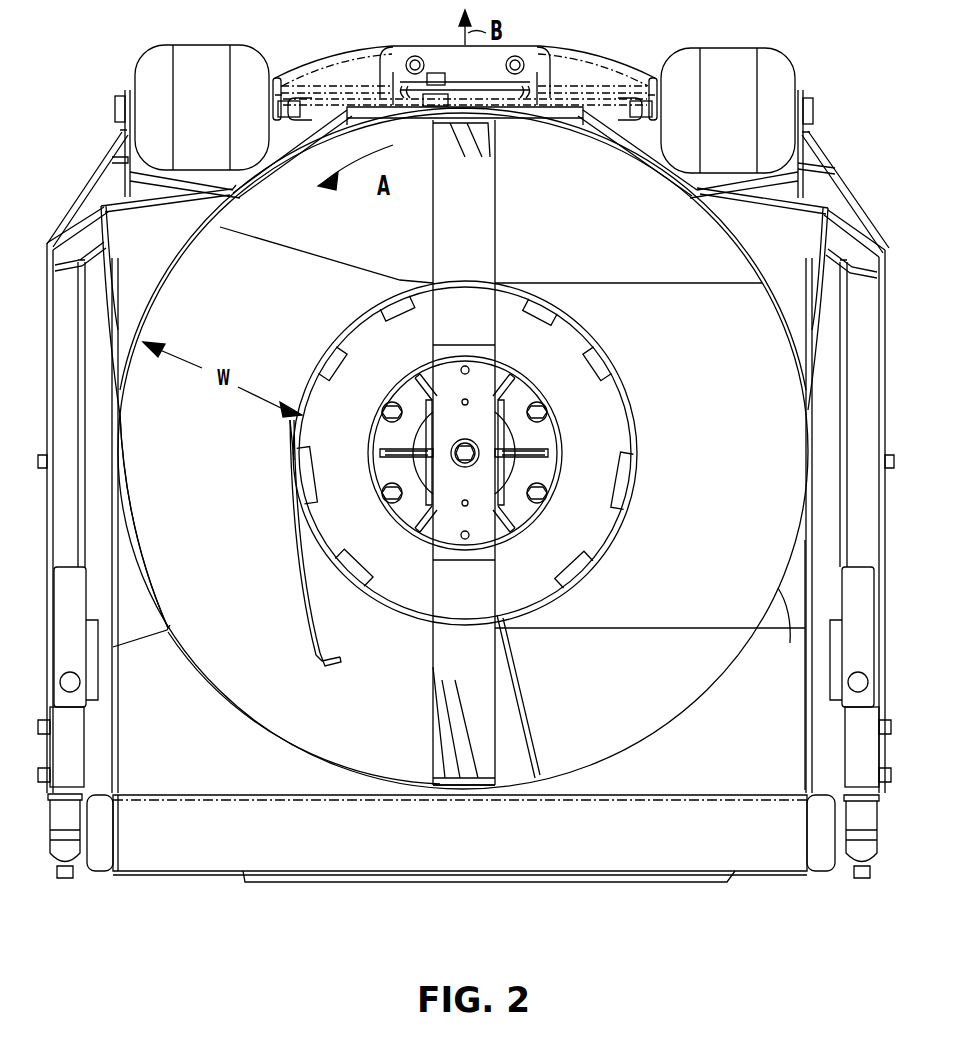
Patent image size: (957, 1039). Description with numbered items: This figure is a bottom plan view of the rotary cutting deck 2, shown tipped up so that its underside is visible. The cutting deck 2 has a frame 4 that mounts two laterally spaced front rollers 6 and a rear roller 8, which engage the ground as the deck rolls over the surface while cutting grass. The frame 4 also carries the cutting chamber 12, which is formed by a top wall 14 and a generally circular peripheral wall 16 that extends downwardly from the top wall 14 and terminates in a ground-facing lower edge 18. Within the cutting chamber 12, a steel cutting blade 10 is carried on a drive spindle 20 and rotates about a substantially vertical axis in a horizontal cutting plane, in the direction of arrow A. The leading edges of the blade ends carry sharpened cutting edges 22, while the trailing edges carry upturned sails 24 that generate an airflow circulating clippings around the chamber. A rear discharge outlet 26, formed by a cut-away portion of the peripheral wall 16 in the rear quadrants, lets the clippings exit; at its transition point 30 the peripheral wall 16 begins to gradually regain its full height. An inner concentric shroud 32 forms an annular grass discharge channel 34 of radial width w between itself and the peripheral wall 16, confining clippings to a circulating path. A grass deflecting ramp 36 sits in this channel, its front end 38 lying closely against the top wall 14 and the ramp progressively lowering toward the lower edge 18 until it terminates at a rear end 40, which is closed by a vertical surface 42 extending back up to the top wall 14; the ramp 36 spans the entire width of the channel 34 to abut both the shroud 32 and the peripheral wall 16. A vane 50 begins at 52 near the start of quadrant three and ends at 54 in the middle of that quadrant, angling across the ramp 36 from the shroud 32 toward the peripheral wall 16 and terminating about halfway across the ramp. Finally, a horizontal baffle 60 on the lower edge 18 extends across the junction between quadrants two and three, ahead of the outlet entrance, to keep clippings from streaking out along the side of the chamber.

The cutting deck 2 is at (856, 198).
The frame 4 is at (860, 387).
The front rollers 6 is at (146, 82).
The rear roller 8 is at (718, 838).
The cutting blade 10 is at (470, 298).
The cutting chamber 12 is at (730, 409).
The top wall 14 is at (708, 506).
The peripheral wall 16 is at (790, 643).
The lower edge 18 is at (752, 640).
The drive spindle 20 is at (472, 450).
The cutting edges 22 is at (434, 172).
The sails 24 is at (482, 157).
The rear discharge outlet 26 is at (246, 714).
The transition point 30 is at (497, 790).
The inner concentric shroud 32 is at (630, 420).
The grass discharge channel 34 is at (738, 546).
The grass deflecting ramp 36 is at (220, 498).
The front end 38 is at (310, 256).
The rear end 40 is at (525, 706).
The vertical surface 42 is at (164, 292).
The vane 50 is at (296, 582).
The beginning of vane 52 is at (290, 463).
The end of vane 54 is at (313, 655).
The horizontal baffle 60 is at (133, 560).